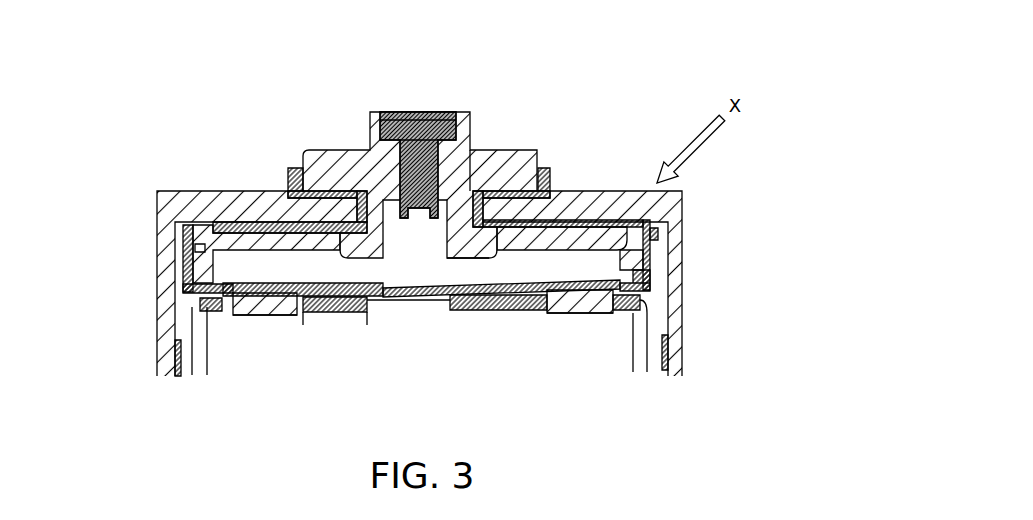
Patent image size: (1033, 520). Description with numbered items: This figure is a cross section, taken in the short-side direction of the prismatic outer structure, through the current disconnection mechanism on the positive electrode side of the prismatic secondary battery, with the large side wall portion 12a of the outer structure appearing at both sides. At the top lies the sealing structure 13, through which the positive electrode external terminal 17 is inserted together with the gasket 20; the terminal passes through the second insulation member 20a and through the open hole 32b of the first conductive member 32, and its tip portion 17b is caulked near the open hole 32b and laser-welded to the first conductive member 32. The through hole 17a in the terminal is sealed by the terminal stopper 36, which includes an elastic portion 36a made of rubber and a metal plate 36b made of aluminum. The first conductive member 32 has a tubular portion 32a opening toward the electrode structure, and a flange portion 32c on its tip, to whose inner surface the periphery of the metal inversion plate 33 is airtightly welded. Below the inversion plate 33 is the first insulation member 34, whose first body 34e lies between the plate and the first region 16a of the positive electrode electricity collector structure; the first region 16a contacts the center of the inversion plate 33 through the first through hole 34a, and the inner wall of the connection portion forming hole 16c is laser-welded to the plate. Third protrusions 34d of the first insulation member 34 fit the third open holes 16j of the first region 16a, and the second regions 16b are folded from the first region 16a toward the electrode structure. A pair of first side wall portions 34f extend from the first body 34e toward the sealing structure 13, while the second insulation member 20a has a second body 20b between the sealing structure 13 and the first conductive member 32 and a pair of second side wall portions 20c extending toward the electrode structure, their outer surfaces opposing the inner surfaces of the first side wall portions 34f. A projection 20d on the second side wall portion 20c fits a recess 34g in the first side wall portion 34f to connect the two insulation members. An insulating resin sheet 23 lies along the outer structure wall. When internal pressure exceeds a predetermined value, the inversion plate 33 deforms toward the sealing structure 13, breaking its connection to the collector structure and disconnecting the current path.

The large side wall portion 12a is at (677, 314).
The sealing structure 13 is at (196, 190).
The first region 16a is at (297, 315).
The second region 16b is at (650, 370).
The connection portion forming hole 16c is at (393, 299).
The third open hole 16j is at (240, 316).
The positive electrode external terminal 17 is at (532, 146).
The through hole 17a is at (474, 190).
The tip portion 17b is at (481, 294).
The gasket 20 is at (295, 166).
The second insulation member 20a is at (578, 214).
The second body 20b is at (250, 232).
The second side wall portion 20c is at (198, 247).
The projection 20d is at (640, 219).
The insulating resin sheet 23 is at (668, 352).
The first conductive member 32 is at (245, 236).
The tubular portion 32a is at (200, 262).
The open hole 32b is at (361, 200).
The flange portion 32c is at (200, 287).
The inversion plate 33 is at (425, 298).
The first insulation member 34 is at (333, 299).
The first through hole 34a is at (458, 298).
The third protrusion 34d is at (262, 315).
The first body 34e is at (618, 312).
The first side wall portion 34f is at (657, 244).
The recess 34g is at (651, 279).
The terminal stopper 36 is at (418, 111).
The elastic portion 36a is at (449, 111).
The metal plate 36b is at (394, 111).